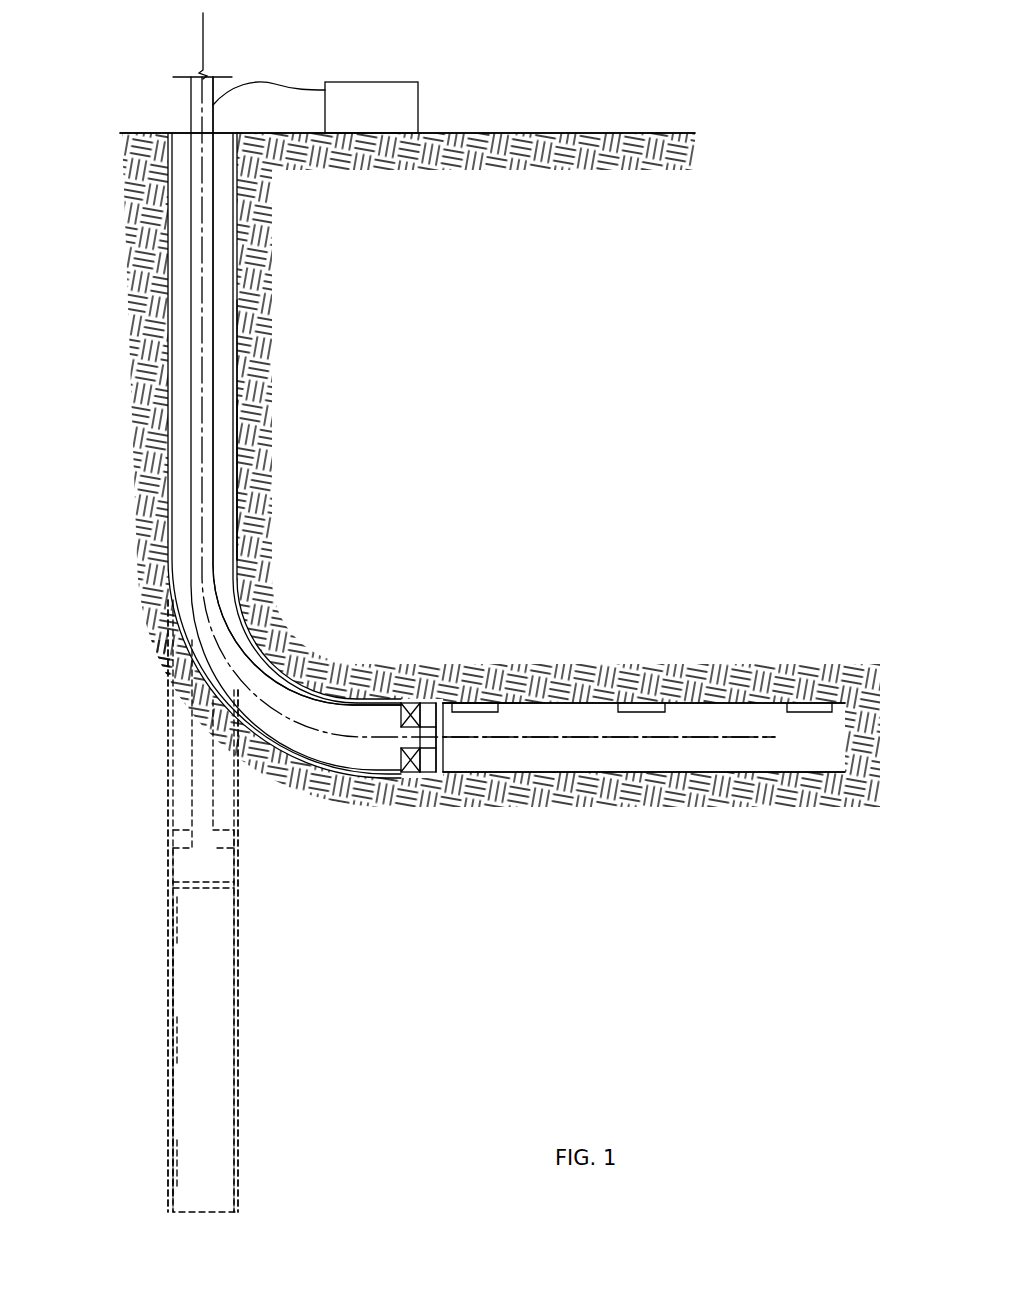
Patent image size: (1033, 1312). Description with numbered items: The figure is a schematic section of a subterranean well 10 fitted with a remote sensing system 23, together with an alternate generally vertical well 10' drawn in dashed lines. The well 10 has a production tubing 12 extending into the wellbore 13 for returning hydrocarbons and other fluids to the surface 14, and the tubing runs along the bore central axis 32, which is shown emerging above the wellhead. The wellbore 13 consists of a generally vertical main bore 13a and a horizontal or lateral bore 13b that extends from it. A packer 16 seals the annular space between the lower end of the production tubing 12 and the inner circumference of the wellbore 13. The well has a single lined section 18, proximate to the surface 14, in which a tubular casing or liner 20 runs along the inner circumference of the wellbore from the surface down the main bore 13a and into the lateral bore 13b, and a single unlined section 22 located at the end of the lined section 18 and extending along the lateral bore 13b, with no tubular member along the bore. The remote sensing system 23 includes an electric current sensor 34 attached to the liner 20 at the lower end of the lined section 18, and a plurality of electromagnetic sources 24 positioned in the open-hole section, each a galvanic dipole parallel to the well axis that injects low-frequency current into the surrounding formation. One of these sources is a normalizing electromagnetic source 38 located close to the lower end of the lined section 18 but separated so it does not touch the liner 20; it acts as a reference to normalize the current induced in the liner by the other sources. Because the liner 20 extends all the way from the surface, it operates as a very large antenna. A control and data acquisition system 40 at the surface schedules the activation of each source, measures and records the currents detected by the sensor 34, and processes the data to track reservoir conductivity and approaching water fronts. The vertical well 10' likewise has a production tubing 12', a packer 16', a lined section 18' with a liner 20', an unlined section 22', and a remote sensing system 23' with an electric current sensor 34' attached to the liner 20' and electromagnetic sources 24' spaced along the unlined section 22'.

The subterranean well 10 is at (482, 424).
The subterranean well 10' is at (133, 906).
The production tubing 12 is at (483, 423).
The production tubing 12' is at (150, 735).
The wellbore 13 is at (236, 401).
The main bore 13a is at (236, 467).
The lateral bore 13b is at (714, 705).
The surface 14 is at (614, 133).
The packer 16 is at (430, 700).
The packer 16' is at (160, 847).
The lined section 18 is at (462, 470).
The lined section 18' is at (110, 670).
The liner 20 is at (284, 455).
The liner 20' is at (157, 906).
The unlined section 22 is at (644, 682).
The unlined section 22' is at (259, 1030).
The remote sensing system 23 is at (609, 796).
The remote sensing system 23' is at (252, 1050).
The electromagnetic source 24 is at (642, 649).
The electromagnetic sources 24' is at (126, 1042).
The bore central axis 32 is at (203, 37).
The electric current sensor 34 is at (515, 779).
The electric current sensor 34' is at (240, 911).
The normalizing electromagnetic source 38 is at (483, 704).
The control and data acquisition system 40 is at (295, 62).